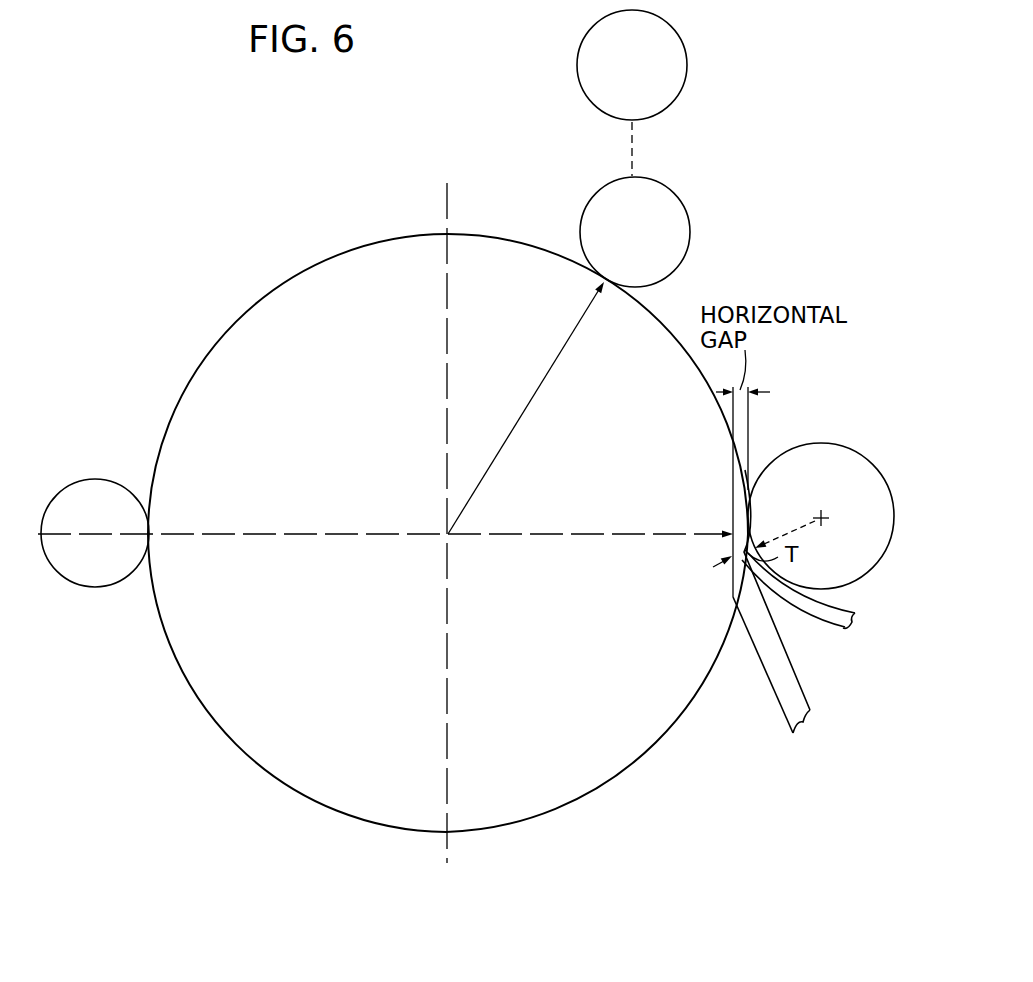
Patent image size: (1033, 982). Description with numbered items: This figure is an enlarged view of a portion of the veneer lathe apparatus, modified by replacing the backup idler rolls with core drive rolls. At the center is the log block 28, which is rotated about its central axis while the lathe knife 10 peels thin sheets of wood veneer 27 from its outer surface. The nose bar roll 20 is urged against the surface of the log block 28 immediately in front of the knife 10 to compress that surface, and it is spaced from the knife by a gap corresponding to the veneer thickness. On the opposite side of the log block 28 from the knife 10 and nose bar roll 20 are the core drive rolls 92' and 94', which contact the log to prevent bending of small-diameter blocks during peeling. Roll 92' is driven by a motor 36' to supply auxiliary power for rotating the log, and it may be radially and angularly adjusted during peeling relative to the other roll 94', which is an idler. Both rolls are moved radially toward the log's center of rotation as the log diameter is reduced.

The log block 28 is at (252, 307).
The core drive roll 94' is at (95, 482).
The core drive roll 92' is at (691, 223).
The motor 36' is at (690, 88).
The nose bar roll 20 is at (863, 453).
The lathe knife 10 is at (778, 638).
The wood veneer 27 is at (835, 608).